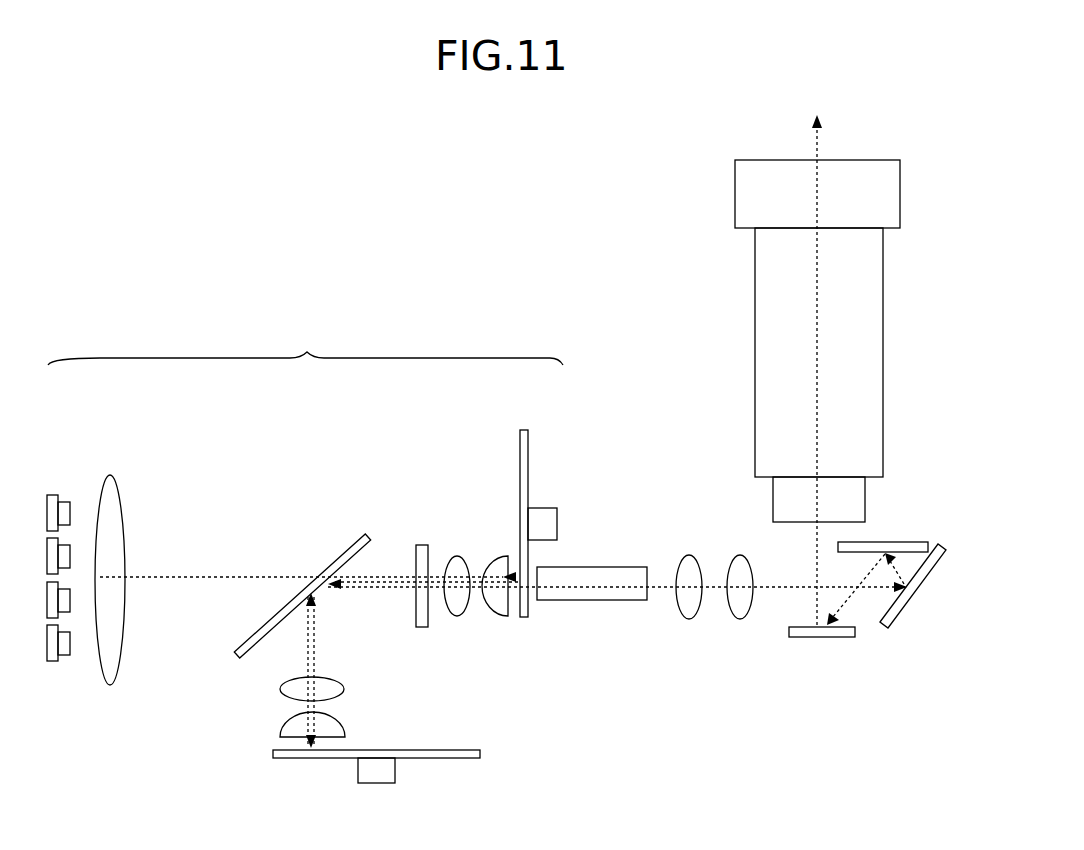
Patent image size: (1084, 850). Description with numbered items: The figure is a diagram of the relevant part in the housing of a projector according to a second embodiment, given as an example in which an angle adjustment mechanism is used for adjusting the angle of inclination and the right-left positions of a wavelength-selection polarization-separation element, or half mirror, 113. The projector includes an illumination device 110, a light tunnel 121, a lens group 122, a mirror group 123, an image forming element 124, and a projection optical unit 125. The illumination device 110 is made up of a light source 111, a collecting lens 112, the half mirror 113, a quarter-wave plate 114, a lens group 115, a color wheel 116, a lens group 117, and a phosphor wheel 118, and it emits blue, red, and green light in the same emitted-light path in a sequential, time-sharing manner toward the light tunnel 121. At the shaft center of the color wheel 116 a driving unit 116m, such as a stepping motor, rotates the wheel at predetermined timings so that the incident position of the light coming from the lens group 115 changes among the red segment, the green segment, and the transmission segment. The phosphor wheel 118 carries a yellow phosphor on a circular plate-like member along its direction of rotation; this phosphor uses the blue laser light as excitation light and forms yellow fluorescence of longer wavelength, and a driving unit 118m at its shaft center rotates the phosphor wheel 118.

The illumination device 110 is at (305, 347).
The light source 111 is at (50, 493).
The collecting lens 112 is at (108, 475).
The wavelength-selection polarization-separation element (half mirror) 113 is at (340, 556).
The quarter-wave plate 114 is at (420, 543).
The lens group 115 is at (492, 561).
The color wheel 116 is at (522, 428).
The driving unit 116m is at (540, 506).
The lens group 117 is at (337, 722).
The phosphor wheel 118 is at (482, 752).
The driving unit 118m is at (397, 769).
The light tunnel 121 is at (590, 565).
The lens group 122 is at (739, 562).
The mirror group 123 is at (938, 541).
The image forming element 124 is at (822, 640).
The projection optical unit 125 is at (884, 351).